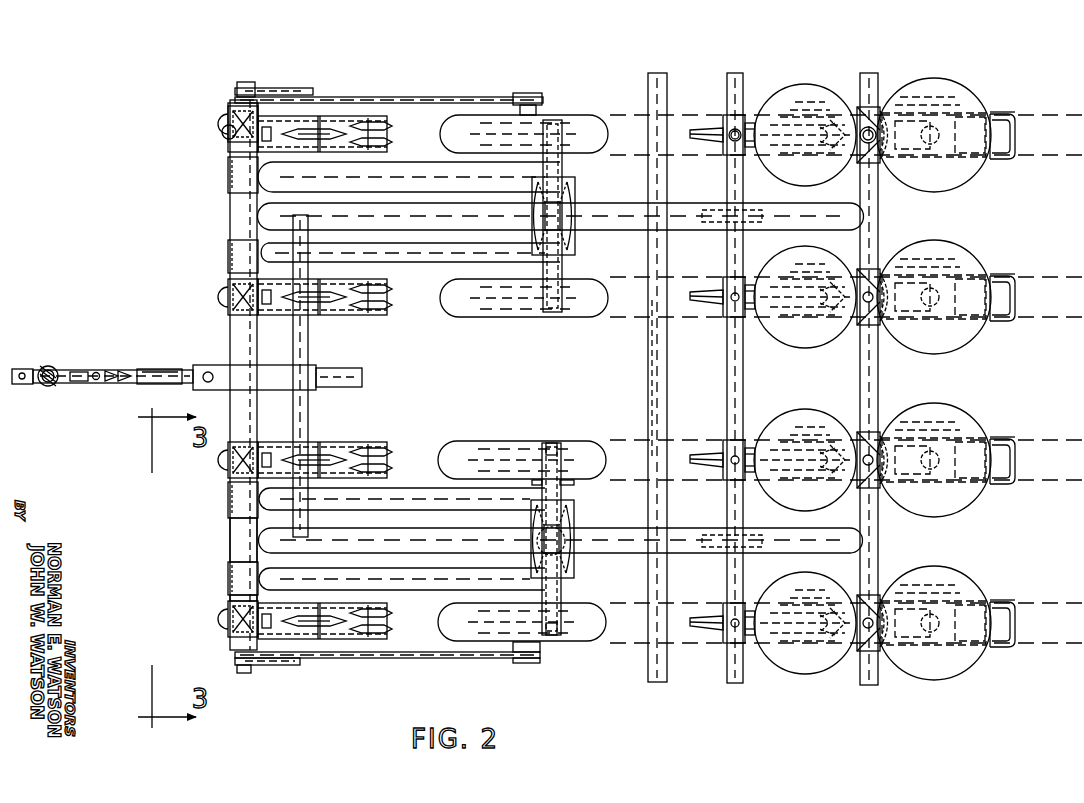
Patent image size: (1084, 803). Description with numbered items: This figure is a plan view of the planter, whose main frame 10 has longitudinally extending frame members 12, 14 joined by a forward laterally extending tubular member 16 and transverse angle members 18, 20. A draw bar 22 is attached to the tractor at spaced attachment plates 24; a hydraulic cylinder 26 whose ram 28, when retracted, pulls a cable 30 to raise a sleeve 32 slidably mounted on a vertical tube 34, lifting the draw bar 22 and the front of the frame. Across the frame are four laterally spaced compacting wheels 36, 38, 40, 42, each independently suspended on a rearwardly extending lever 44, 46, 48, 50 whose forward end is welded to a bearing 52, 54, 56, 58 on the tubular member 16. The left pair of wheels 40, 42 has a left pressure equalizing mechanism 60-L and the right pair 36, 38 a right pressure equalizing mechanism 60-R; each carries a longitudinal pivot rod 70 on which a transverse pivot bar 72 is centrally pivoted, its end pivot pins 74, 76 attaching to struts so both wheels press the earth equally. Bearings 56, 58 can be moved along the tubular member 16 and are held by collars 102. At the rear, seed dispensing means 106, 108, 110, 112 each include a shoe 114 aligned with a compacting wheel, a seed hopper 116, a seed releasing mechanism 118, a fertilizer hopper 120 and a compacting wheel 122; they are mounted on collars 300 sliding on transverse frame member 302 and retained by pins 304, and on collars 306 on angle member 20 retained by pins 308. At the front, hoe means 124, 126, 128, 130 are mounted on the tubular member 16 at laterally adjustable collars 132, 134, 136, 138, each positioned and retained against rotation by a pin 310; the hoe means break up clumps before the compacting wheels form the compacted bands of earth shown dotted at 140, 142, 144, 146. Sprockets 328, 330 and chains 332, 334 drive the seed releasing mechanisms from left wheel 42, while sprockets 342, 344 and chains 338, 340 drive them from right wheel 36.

The main frame 10 is at (660, 73).
The longitudinally extending frame member 12 is at (704, 231).
The longitudinally extending frame member 14 is at (704, 554).
The forward laterally extending tubular member 16 is at (230, 330).
The transverse angle member 18 is at (667, 378).
The transverse angle member 20 is at (880, 228).
The draw bar 22 is at (128, 384).
The attachment plates 24 is at (20, 385).
The hydraulic cylinder 26 is at (158, 369).
The ram 28 is at (125, 370).
The cable 30 is at (95, 381).
The sleeve 32 is at (50, 365).
The vertical tube 34 is at (48, 383).
The compacting wheel 36 is at (442, 125).
The compacting wheel 38 is at (470, 318).
The compacting wheel 40 is at (476, 441).
The compacting wheel 42 is at (440, 630).
The rearwardly extending lever 44 is at (400, 164).
The rearwardly extending lever 46 is at (430, 264).
The rearwardly extending lever 48 is at (400, 490).
The rearwardly extending lever 50 is at (426, 591).
The bearing 52 is at (228, 176).
The bearing 54 is at (228, 251).
The bearing 56 is at (228, 505).
The bearing 58 is at (228, 578).
The right pressure equalizing mechanism 60-R is at (577, 190).
The left pressure equalizing mechanism 60-L is at (575, 520).
The pivot rod 70 is at (570, 562).
The transverse pivot bar 72 is at (560, 484).
The pivot pin 74 is at (560, 445).
The pivot pin 76 is at (561, 640).
The collar 102 is at (228, 562).
The seed dispensing means 106 is at (1018, 114).
The seed dispensing means 108 is at (1018, 275).
The seed dispensing means 110 is at (1018, 439).
The seed dispensing means 112 is at (1018, 602).
The shoe 114 is at (700, 130).
The seed hopper 116 is at (806, 84).
The seed releasing mechanism 118 is at (838, 150).
The fertilizer hopper 120 is at (950, 80).
The compacting wheel 122 is at (1000, 159).
The hoe means 124 is at (330, 112).
The hoe means 126 is at (382, 314).
The hoe means 128 is at (340, 440).
The hoe means 130 is at (364, 652).
The bearing 132 is at (228, 120).
The bearing 134 is at (228, 288).
The bearing 136 is at (228, 470).
The bearing 138 is at (228, 632).
The compacted band of earth 140 is at (620, 113).
The compacted band of earth 142 is at (601, 320).
The compacted band of earth 144 is at (608, 440).
The compacted band of earth 146 is at (622, 643).
The collar 300 is at (724, 152).
The transverse frame member 302 is at (738, 73).
The pin 304 is at (738, 128).
The collar 306 is at (876, 110).
The pin 308 is at (862, 107).
The pin 310 is at (222, 132).
The sprocket 328 is at (242, 673).
The sprocket 330 is at (525, 663).
The chain 332 is at (440, 658).
The chain 334 is at (275, 665).
The chain 338 is at (420, 97).
The chain 340 is at (300, 88).
The sprocket 342 is at (248, 82).
The sprocket 344 is at (530, 93).